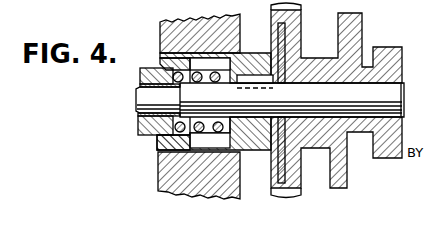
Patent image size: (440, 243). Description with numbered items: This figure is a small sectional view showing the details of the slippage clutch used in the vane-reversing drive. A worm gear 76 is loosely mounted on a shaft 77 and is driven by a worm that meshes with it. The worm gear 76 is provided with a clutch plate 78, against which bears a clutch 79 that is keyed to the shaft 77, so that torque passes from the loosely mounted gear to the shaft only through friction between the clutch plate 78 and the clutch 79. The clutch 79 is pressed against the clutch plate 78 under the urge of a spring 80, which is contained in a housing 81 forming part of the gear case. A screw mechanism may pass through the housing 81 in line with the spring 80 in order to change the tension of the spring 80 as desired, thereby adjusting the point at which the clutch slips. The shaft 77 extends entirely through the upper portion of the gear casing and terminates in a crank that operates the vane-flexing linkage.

The worm gear 76 is at (293, 33).
The shaft 77 is at (402, 83).
The clutch plate 78 is at (283, 32).
The clutch 79 is at (202, 53).
The spring 80 is at (162, 65).
The housing 81 is at (141, 78).